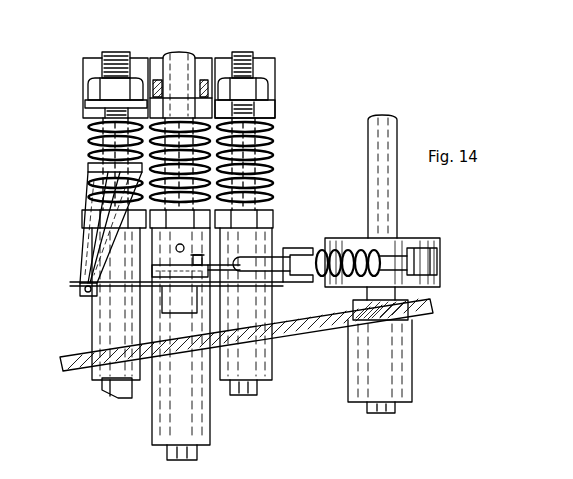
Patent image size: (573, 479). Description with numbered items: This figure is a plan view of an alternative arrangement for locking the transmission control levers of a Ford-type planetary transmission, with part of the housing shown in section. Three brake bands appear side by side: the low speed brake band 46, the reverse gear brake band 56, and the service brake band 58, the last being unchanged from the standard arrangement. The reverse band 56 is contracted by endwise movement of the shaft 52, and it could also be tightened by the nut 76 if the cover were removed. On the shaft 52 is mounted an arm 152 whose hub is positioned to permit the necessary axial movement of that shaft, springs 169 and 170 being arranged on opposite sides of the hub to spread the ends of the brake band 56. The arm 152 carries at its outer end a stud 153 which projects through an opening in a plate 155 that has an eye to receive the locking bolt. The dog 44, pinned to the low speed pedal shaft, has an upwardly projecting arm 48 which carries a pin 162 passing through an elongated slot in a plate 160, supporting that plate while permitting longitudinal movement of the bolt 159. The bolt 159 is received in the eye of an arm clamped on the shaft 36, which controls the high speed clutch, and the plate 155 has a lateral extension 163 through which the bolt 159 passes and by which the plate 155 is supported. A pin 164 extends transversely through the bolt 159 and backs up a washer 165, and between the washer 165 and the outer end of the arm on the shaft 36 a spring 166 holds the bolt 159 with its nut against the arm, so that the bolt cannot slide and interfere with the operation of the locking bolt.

The shaft 52 is at (122, 55).
The nut 76 is at (98, 90).
The brake band 56 is at (90, 112).
The spring 169 is at (94, 146).
The brake band 46 is at (205, 110).
The service brake band 58 is at (268, 112).
The spring 170 is at (139, 209).
The shaft 36 is at (379, 143).
The arm 152 is at (82, 238).
The stud 153 is at (79, 290).
The arm 48 is at (158, 272).
The plate 160 is at (176, 246).
The pin 162 is at (203, 252).
The bolt 159 is at (273, 263).
The lateral extension 163 is at (292, 250).
The pin 164 is at (322, 250).
The washer 165 is at (330, 243).
The spring 166 is at (332, 288).
The dog 44 is at (155, 286).
The plate 155 is at (102, 388).